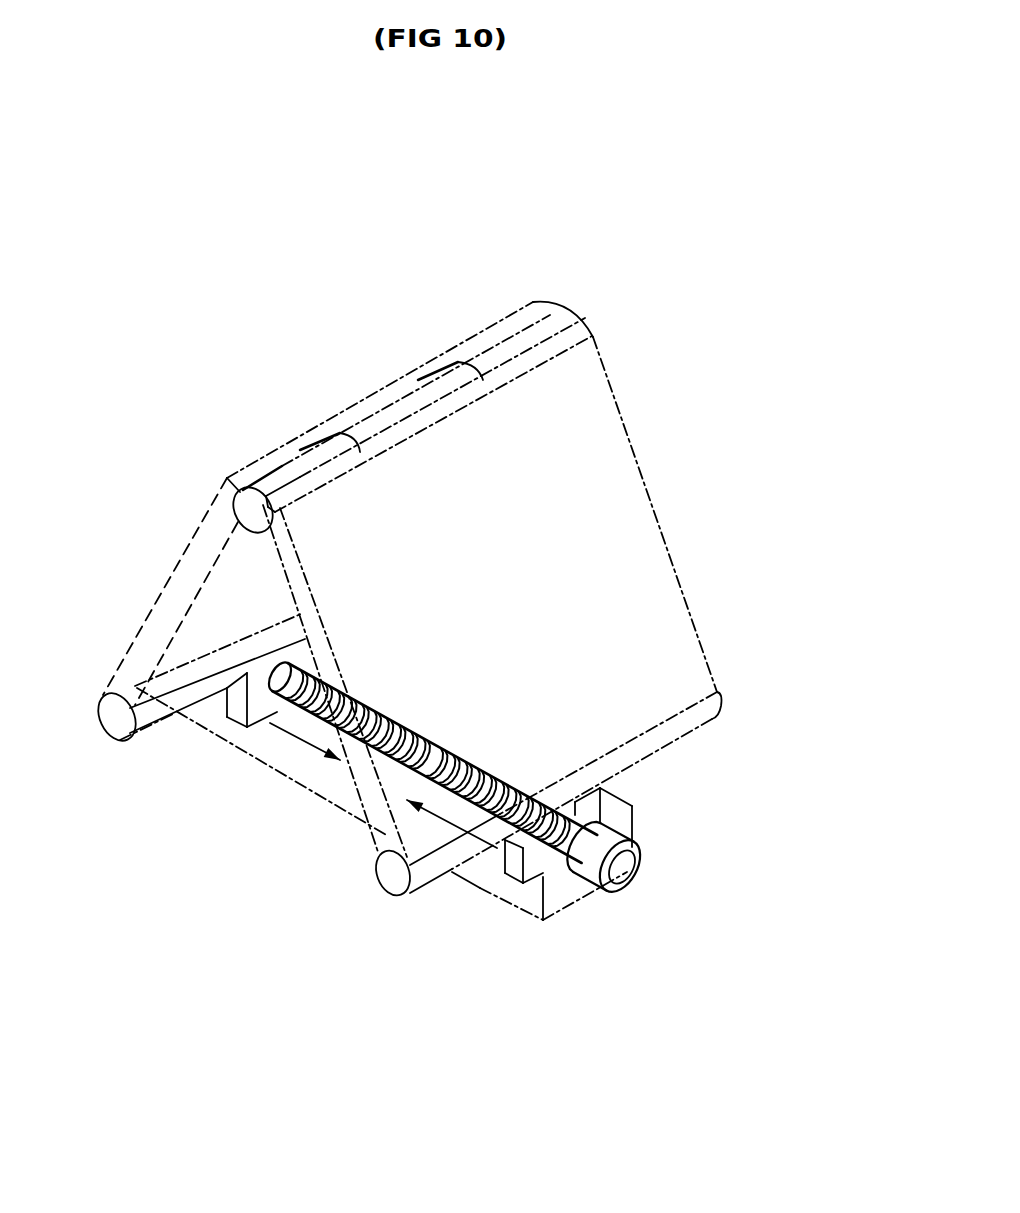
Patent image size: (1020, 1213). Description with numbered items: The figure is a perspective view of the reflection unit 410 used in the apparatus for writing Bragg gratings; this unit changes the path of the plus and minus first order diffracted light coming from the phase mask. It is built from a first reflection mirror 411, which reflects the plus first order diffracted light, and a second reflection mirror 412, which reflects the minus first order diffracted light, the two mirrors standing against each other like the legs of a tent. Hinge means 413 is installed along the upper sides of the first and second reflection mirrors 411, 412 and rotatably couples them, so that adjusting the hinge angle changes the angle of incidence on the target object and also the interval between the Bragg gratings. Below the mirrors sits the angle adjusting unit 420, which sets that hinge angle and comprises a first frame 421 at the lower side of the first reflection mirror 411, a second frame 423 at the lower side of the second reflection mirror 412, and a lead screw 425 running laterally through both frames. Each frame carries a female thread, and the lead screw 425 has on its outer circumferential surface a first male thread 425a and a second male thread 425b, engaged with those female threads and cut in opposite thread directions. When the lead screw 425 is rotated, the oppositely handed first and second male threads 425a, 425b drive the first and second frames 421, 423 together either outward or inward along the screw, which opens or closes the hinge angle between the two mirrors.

The reflection unit 410 is at (347, 375).
The first reflection mirror 411 is at (178, 558).
The second reflection mirror 412 is at (599, 491).
The hinge means 413 is at (541, 298).
The angle adjusting unit 420 is at (462, 908).
The first frame 421 is at (200, 727).
The second frame 423 is at (628, 785).
The lead screw 425 is at (620, 872).
The first male thread 425a is at (370, 722).
The second male thread 425b is at (477, 767).